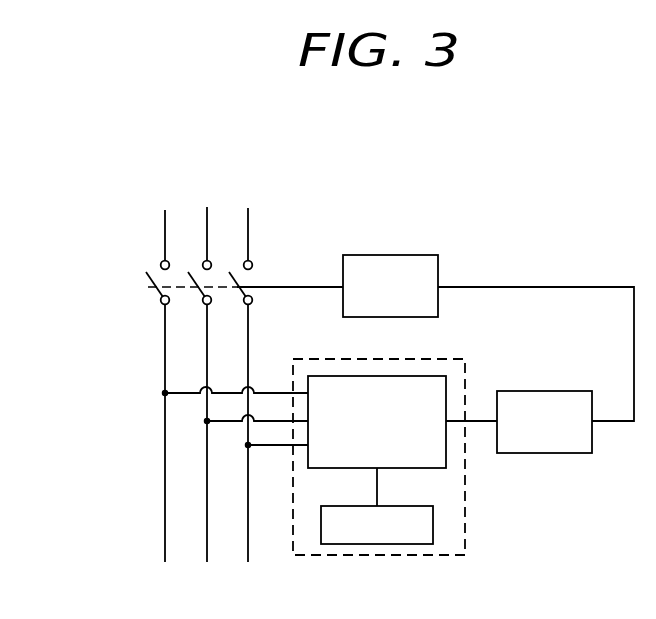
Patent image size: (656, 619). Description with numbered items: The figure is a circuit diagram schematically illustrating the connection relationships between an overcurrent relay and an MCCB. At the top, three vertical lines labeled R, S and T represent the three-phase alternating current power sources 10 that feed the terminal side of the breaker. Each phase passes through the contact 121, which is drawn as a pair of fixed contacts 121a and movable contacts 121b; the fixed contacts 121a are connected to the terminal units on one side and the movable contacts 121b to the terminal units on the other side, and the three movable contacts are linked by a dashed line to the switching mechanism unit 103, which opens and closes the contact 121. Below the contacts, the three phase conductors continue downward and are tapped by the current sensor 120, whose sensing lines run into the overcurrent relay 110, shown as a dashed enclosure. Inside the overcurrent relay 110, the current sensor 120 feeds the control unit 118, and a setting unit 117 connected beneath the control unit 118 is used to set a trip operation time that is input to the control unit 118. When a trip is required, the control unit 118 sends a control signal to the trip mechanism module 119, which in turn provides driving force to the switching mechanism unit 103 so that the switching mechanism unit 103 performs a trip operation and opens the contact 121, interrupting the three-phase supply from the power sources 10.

The 3-phase alternating current power sources 10 is at (248, 208).
The switching mechanism unit 103 is at (392, 255).
The overcurrent relay 110 is at (403, 485).
The setting unit 117 is at (434, 525).
The control unit 118 is at (448, 458).
The trip mechanism module 119 is at (543, 391).
The current sensor 120 is at (248, 445).
The contact 121 is at (132, 270).
The fixed contacts 121a is at (160, 265).
The movable contacts 121b is at (150, 284).